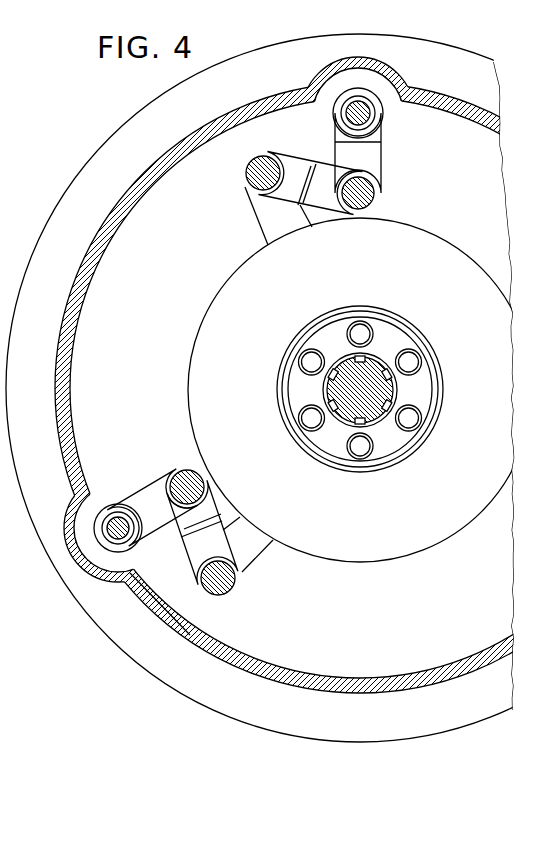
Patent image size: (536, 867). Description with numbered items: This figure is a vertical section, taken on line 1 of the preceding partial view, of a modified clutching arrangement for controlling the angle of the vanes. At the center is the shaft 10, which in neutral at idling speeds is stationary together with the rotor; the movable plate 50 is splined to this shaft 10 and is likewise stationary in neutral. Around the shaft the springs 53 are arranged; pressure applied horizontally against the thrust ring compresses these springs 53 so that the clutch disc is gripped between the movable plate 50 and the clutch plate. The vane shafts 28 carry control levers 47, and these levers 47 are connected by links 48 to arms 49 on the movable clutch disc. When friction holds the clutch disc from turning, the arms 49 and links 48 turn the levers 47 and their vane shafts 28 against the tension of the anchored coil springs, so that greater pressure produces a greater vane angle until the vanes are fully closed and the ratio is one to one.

The section line 1 is at (268, 433).
The shaft 10 is at (394, 396).
The vane shaft 28 is at (368, 116).
The lever 47 is at (338, 160).
The link 48 is at (288, 158).
The arm 49 is at (261, 226).
The movable plate 50 is at (360, 390).
The spring 53 is at (349, 352).